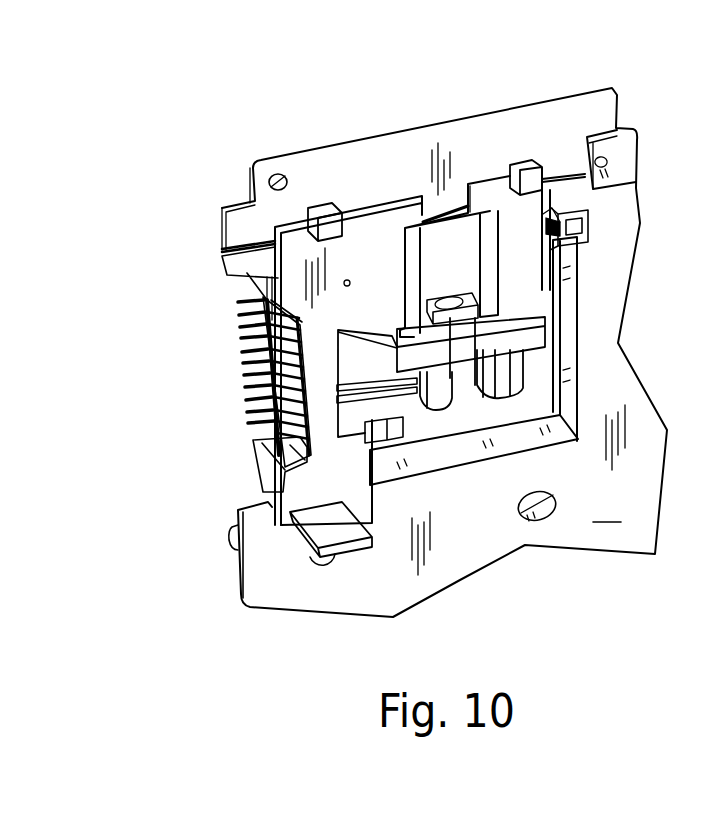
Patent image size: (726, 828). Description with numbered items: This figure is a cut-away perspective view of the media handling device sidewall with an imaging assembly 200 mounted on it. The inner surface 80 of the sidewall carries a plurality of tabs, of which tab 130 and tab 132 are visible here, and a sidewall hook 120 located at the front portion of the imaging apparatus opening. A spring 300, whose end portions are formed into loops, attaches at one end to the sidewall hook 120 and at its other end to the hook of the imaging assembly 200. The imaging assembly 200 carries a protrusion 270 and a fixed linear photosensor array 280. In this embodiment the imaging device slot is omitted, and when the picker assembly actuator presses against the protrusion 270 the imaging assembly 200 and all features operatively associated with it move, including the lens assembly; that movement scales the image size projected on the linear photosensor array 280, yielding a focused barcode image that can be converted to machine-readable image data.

The inner surface 80 is at (444, 352).
The sidewall hook 120 is at (560, 232).
The tab 130 is at (330, 215).
The tab 132 is at (527, 180).
The imaging assembly 200 is at (372, 240).
The protrusion 270 is at (324, 546).
The linear photosensor array 280 is at (243, 342).
The spring 300 is at (556, 236).